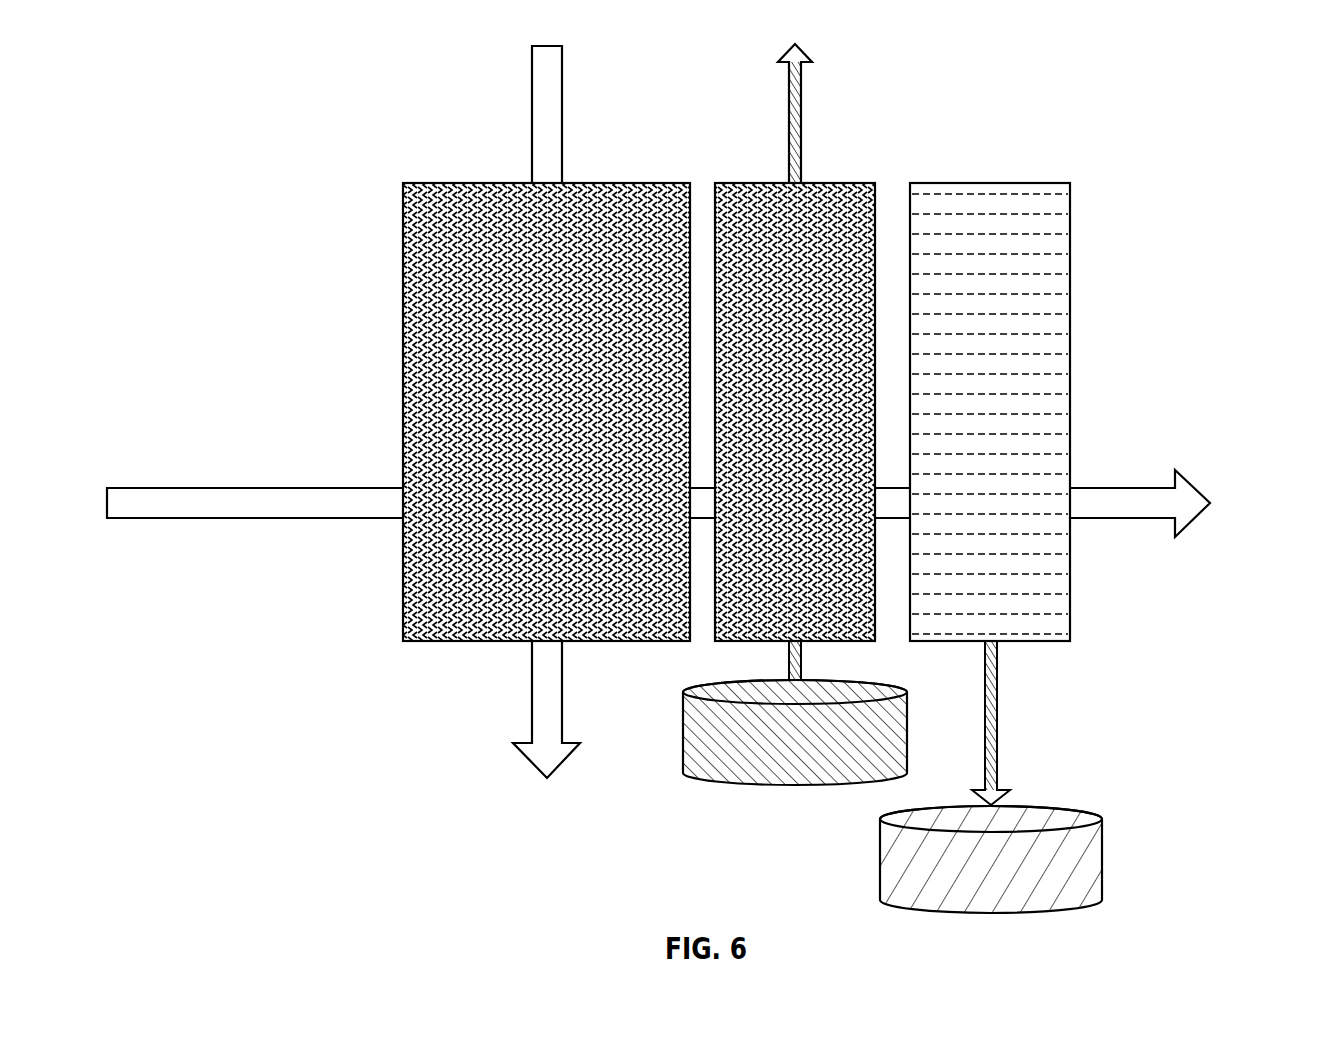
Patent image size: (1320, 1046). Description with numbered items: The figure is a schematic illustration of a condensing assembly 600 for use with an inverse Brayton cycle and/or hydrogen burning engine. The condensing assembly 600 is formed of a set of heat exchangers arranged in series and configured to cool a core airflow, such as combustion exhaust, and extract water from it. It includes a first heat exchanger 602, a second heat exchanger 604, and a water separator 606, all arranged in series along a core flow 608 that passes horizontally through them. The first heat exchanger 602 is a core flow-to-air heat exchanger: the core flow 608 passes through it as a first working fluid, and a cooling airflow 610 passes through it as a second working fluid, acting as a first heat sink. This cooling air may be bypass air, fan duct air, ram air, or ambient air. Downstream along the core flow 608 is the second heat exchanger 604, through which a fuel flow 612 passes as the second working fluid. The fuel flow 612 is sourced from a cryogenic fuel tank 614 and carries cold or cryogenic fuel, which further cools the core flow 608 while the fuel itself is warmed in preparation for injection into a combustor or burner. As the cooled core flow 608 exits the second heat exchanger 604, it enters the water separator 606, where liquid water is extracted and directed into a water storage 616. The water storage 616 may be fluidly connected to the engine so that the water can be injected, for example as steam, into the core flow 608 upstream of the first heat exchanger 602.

The condensing assembly 600 is at (1212, 98).
The first heat exchanger 602 is at (633, 183).
The second heat exchanger 604 is at (835, 183).
The water separator 606 is at (995, 182).
The core flow 608 is at (275, 487).
The cooling airflow 610 is at (532, 115).
The fuel flow 612 is at (789, 115).
The cryogenic fuel tank 614 is at (795, 787).
The water storage 616 is at (1103, 862).